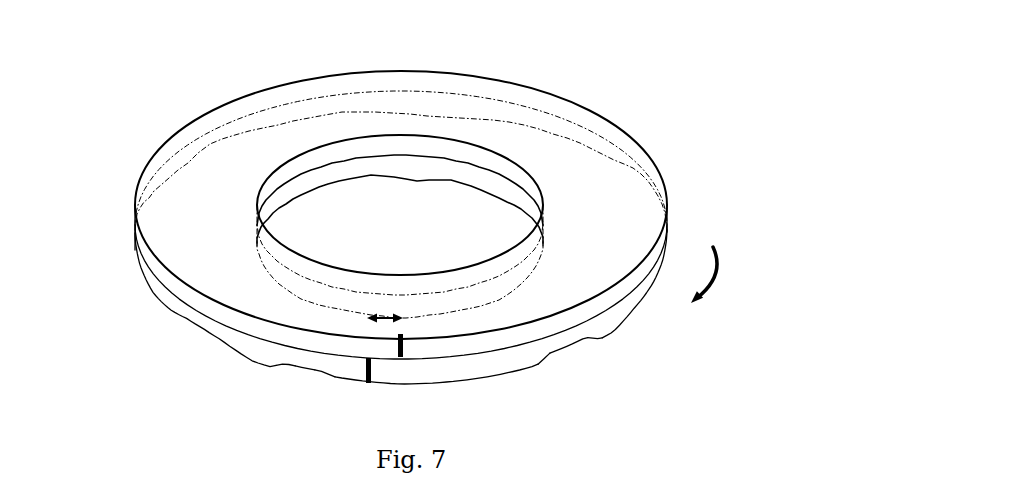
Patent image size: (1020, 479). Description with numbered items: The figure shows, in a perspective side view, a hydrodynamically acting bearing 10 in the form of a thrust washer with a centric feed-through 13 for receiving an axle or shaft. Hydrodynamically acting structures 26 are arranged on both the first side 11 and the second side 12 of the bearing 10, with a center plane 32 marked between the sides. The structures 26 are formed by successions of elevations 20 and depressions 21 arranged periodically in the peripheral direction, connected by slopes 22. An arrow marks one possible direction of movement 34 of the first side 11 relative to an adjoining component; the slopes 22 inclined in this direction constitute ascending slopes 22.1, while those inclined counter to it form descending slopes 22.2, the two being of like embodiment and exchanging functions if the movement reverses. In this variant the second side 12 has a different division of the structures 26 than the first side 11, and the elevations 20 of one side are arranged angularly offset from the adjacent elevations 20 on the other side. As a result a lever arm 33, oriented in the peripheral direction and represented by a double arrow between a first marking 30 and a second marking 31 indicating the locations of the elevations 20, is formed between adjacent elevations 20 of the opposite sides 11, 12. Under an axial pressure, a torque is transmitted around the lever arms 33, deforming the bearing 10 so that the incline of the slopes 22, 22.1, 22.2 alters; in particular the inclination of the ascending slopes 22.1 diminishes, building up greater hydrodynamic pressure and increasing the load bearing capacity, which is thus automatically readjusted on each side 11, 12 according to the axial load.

The hydrodynamically acting bearing 10 is at (107, 82).
The first side 11 is at (205, 67).
The second side 12 is at (145, 345).
The centric feed-through 13 is at (345, 193).
The elevations 20 is at (398, 70).
The depressions 21 is at (533, 97).
The slopes 22 is at (482, 83).
The ascending slopes 22.1 is at (325, 373).
The descending slopes 22.2 is at (277, 363).
The hydrodynamically acting structures 26 is at (263, 72).
The first marking 30 is at (405, 350).
The second marking 31 is at (365, 373).
The center plane 32 is at (135, 252).
The lever arm 33 is at (382, 313).
The direction of movement 34 is at (718, 268).